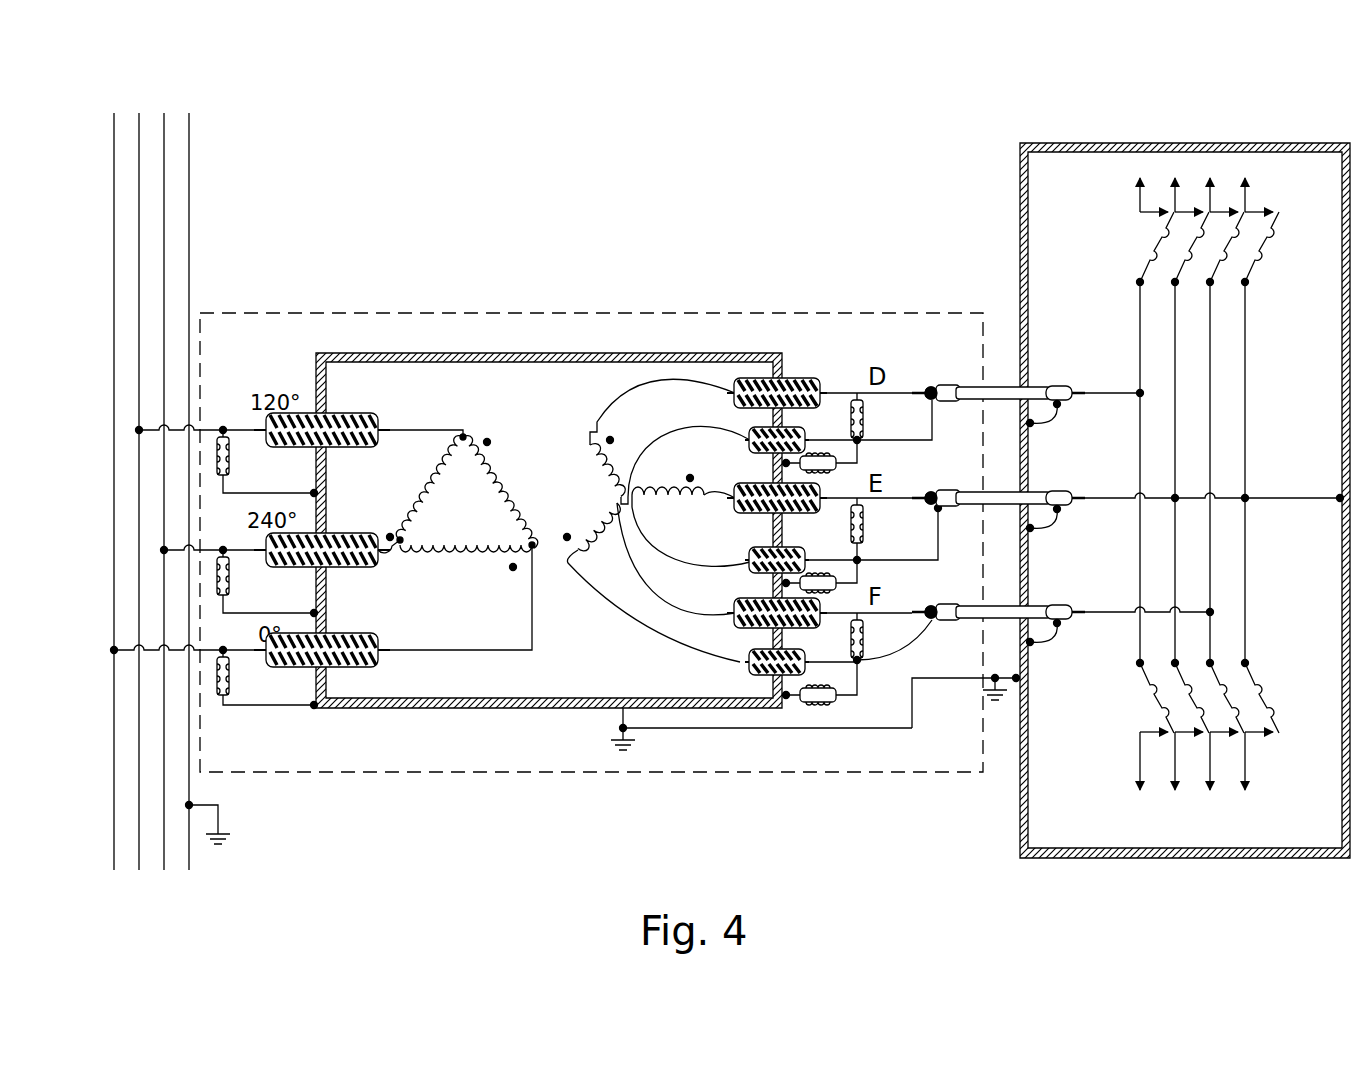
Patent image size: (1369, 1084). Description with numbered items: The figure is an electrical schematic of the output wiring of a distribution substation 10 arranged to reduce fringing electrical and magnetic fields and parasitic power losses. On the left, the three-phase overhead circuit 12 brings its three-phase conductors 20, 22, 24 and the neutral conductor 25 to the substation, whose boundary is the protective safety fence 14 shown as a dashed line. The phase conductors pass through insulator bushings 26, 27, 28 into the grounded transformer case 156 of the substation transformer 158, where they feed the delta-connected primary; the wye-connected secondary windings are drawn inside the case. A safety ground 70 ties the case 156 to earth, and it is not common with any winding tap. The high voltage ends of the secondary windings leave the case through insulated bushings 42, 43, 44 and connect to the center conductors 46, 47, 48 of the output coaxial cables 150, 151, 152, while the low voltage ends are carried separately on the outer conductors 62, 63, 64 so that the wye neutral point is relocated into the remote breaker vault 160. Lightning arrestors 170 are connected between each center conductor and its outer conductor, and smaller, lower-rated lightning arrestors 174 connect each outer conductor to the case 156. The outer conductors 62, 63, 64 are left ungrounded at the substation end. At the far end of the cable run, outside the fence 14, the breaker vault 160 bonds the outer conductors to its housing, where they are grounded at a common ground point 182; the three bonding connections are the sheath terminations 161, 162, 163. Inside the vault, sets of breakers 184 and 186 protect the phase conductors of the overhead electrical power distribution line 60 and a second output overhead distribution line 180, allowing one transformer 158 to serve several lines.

The substation 10 is at (645, 212).
The three-phase overhead circuit 12 is at (200, 134).
The protective safety fence 14 is at (304, 313).
The three-phase conductor 20 is at (114, 182).
The three-phase conductor 22 is at (139, 197).
The three-phase conductor 24 is at (164, 228).
The neutral conductor 25 is at (189, 263).
The insulator bushing 26 is at (333, 635).
The insulator bushing 27 is at (333, 535).
The insulator bushing 28 is at (333, 413).
The insulated bushing 42 is at (797, 380).
The insulated bushing 43 is at (758, 512).
The insulated bushing 44 is at (758, 626).
The center conductor 46 is at (1066, 388).
The center conductor 47 is at (1066, 493).
The center conductor 48 is at (1066, 607).
The overhead electrical power distribution line 60 is at (1252, 298).
The outer conductor 62 is at (936, 386).
The outer conductor 63 is at (936, 491).
The outer conductor 64 is at (936, 605).
The safety ground 70 is at (633, 757).
The output coaxial cable 150 is at (1003, 385).
The output coaxial cable 151 is at (1006, 492).
The output coaxial cable 152 is at (1048, 604).
The transformer case 156 is at (412, 353).
The substation transformer 158 is at (568, 435).
The breaker vault 160 is at (1040, 143).
The shield ground connection 161 is at (1055, 410).
The shield ground connection 162 is at (1055, 515).
The shield ground connection 163 is at (1055, 628).
The lightning arrestor 170 is at (863, 420).
The lightning arrestor 174 is at (838, 471).
The output overhead distribution line 180 is at (1250, 644).
The common ground point 182 is at (986, 715).
The breakers 184 is at (1130, 300).
The breakers 186 is at (1137, 680).